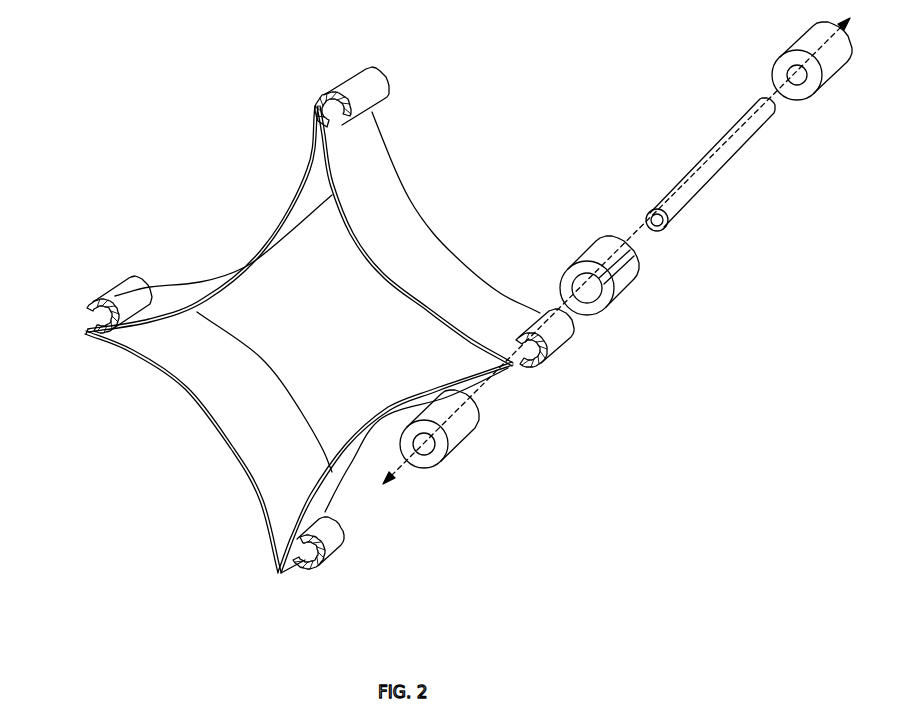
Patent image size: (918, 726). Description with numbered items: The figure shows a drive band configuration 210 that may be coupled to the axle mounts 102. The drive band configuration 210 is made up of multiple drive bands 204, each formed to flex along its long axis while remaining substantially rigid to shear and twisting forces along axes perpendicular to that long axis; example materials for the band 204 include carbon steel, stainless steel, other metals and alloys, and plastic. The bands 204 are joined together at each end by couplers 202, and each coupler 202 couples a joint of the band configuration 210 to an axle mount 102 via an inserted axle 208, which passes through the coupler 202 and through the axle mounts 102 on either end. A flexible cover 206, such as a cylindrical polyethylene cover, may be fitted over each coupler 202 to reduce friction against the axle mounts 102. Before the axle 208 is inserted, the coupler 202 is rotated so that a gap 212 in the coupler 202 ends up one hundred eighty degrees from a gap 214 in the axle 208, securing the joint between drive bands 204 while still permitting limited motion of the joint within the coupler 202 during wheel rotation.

The axle mount 102 is at (457, 448).
The coupler 202 is at (375, 80).
The drive band 204 is at (432, 243).
The flexible cover 206 is at (628, 290).
The axle 208 is at (684, 207).
The drive band configuration 210 is at (190, 403).
The gap in the coupler 212 is at (84, 311).
The gap in the axle 214 is at (647, 212).